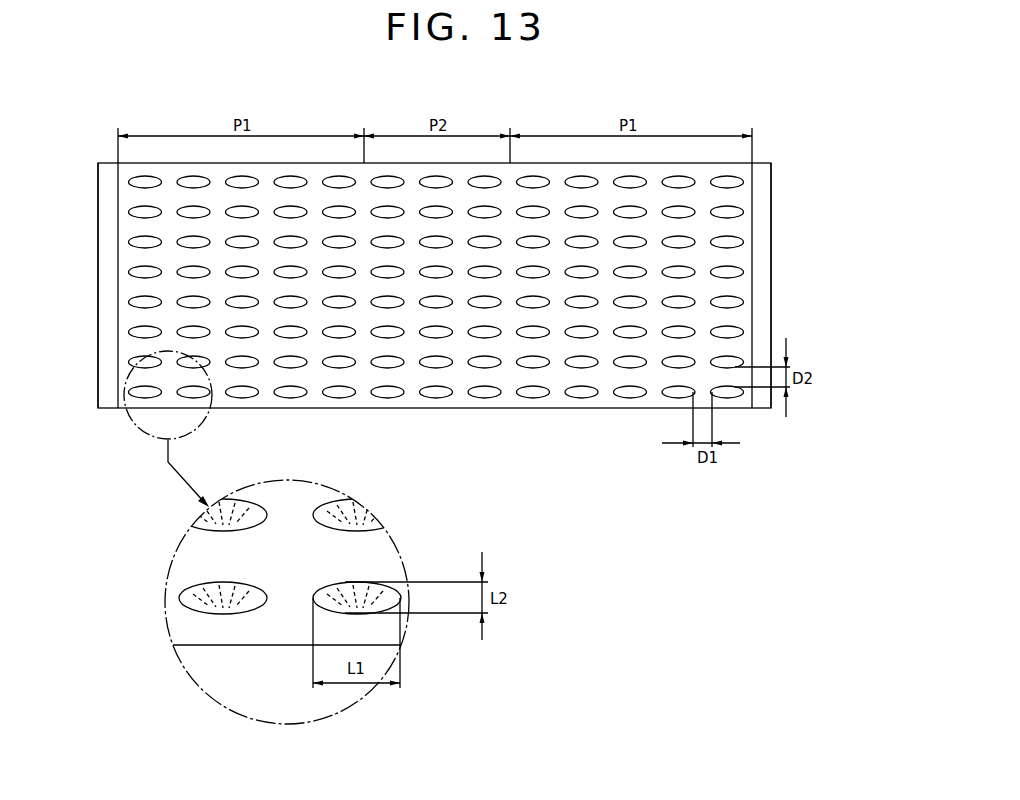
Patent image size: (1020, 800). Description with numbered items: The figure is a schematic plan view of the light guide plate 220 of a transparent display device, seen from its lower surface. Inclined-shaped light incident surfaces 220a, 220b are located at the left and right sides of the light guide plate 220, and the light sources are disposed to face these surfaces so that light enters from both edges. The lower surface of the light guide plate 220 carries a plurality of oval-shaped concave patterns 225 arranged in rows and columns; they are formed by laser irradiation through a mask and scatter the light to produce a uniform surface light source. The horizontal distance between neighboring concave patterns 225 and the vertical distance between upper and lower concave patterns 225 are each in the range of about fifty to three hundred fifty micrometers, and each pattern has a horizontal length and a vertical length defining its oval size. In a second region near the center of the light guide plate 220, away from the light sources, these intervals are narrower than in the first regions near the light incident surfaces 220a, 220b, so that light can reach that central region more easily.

The light guide plate 220 is at (747, 255).
The concave patterns 225 is at (735, 302).
The light incident surface 220a is at (108, 405).
The light incident surface 220b is at (765, 405).